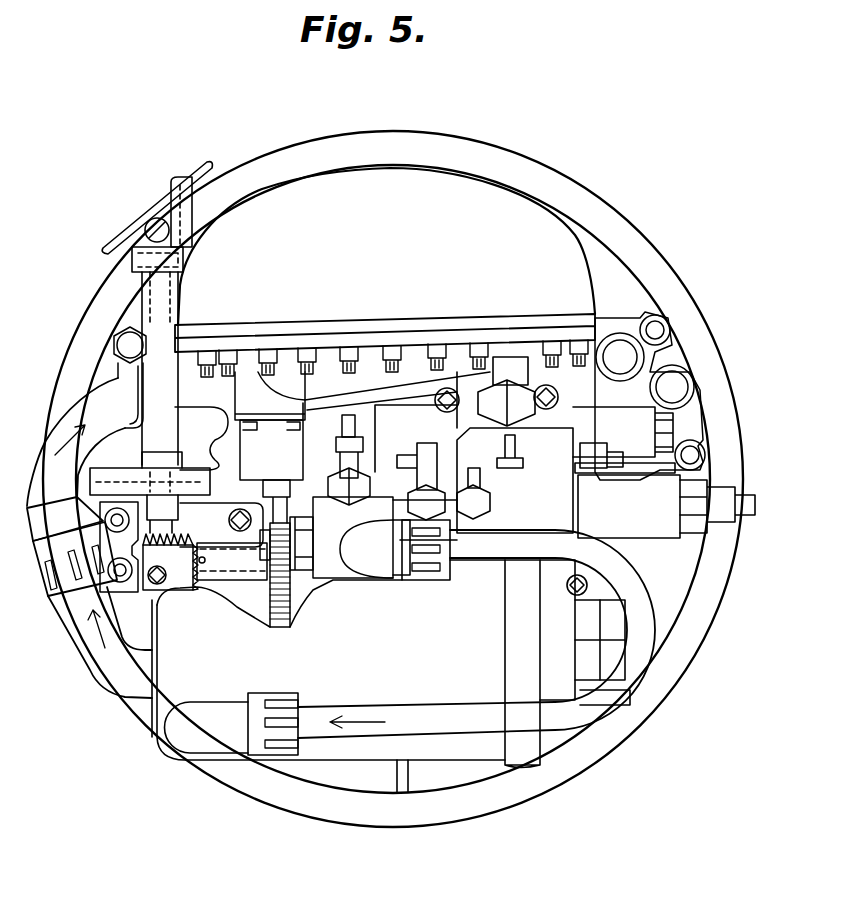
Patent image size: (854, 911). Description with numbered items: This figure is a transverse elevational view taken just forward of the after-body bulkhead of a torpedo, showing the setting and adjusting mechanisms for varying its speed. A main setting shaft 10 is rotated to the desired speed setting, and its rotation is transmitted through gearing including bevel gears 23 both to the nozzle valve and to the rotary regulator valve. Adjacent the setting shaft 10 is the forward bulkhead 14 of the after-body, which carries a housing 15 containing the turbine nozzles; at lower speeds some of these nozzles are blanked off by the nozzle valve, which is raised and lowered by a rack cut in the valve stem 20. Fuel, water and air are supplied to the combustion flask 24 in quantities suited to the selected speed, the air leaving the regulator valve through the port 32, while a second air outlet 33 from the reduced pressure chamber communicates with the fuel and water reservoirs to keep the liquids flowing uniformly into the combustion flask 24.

The main setting shaft 10 is at (160, 343).
The forward bulkhead of the after-body 14 is at (574, 184).
The housing 15 is at (483, 193).
The valve stem 20 is at (278, 503).
The bevel gears 23 is at (180, 593).
The combustion flask 24 is at (391, 676).
The port 32 is at (367, 567).
The second air outlet 33 is at (349, 455).